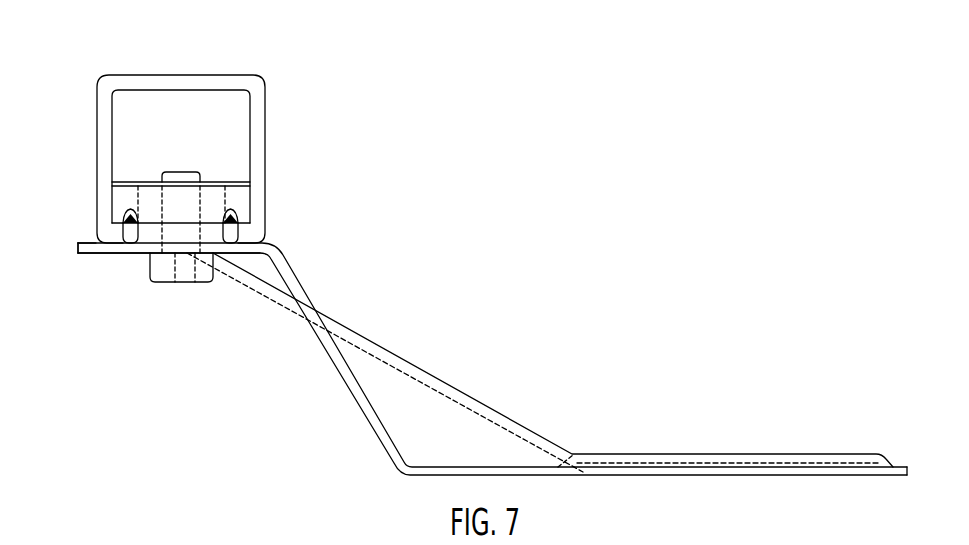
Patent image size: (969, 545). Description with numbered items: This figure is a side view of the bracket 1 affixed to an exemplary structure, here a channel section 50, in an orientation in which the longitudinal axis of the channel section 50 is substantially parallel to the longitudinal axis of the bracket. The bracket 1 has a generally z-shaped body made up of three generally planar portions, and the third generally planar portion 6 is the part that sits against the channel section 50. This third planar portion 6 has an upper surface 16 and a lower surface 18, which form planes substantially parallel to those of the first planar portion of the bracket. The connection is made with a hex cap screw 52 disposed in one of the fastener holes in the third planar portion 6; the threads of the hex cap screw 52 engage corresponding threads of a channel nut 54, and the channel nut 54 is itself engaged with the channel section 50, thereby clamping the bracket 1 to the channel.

The bracket 1 is at (565, 343).
The third generally planar portion 6 is at (78, 247).
The upper surface 16 is at (84, 240).
The lower surface 18 is at (109, 255).
The channel section 50 is at (281, 82).
The hex cap screw 52 is at (181, 286).
The channel nut 54 is at (228, 193).